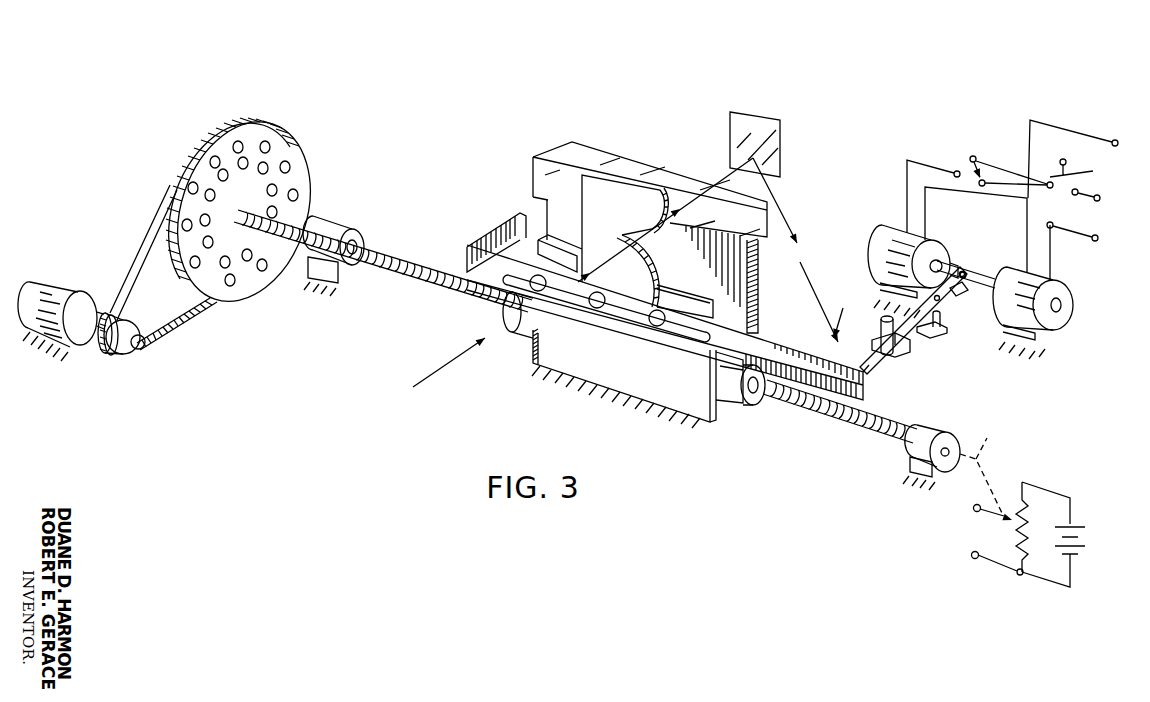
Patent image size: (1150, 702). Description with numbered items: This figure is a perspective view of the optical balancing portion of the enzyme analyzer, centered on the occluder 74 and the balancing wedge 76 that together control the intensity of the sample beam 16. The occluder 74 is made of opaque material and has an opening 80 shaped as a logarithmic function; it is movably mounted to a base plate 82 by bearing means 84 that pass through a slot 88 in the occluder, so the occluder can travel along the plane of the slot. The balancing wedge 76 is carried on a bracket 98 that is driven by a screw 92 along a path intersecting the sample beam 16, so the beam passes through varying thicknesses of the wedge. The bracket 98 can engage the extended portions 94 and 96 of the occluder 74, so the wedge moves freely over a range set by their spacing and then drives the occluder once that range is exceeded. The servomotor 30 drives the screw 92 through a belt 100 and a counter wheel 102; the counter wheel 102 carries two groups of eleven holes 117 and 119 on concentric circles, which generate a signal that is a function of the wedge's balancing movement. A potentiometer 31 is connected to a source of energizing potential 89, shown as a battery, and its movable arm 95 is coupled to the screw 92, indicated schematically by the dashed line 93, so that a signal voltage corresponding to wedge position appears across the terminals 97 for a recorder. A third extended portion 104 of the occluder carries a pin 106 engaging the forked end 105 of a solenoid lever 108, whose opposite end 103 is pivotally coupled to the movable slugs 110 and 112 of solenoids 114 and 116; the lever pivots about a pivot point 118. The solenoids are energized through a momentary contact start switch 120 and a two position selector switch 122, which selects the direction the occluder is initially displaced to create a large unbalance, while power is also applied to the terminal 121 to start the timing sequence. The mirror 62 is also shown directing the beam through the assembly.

The sample beam 16 is at (433, 373).
The servomotor 30 is at (82, 292).
The potentiometer 31 is at (1027, 500).
The mirror 62 is at (773, 112).
The occluder 74 is at (618, 215).
The balancing wedge 76 is at (650, 155).
The opening 80 is at (658, 262).
The base plate 82 is at (712, 416).
The bearing means 84 is at (541, 292).
The slot 88 is at (752, 322).
The source of energizing potential 89 is at (1083, 537).
The screw 92 is at (428, 289).
The dashed line 93 is at (985, 467).
The extended portion 94 is at (847, 315).
The movable arm 95 is at (998, 516).
The extended portion 96 is at (500, 222).
The terminals 97 is at (973, 508).
The bracket 98 is at (543, 210).
The belt 100 is at (178, 341).
The counter wheel 102 is at (296, 128).
The opposite end 103 is at (966, 272).
The third extended portion 104 is at (868, 391).
The forked end 105 is at (912, 350).
The pin 106 is at (880, 330).
The solenoid lever 108 is at (955, 300).
The movable slug 110 is at (985, 280).
The movable slug 112 is at (952, 263).
The solenoid 114 is at (1052, 282).
The solenoid 116 is at (880, 232).
The holes 117 is at (200, 219).
The pivot point 118 is at (942, 330).
The holes 119 is at (188, 188).
The momentary contact start switch 120 is at (1087, 200).
The terminal 121 is at (1117, 140).
The two position selector switch 122 is at (970, 156).